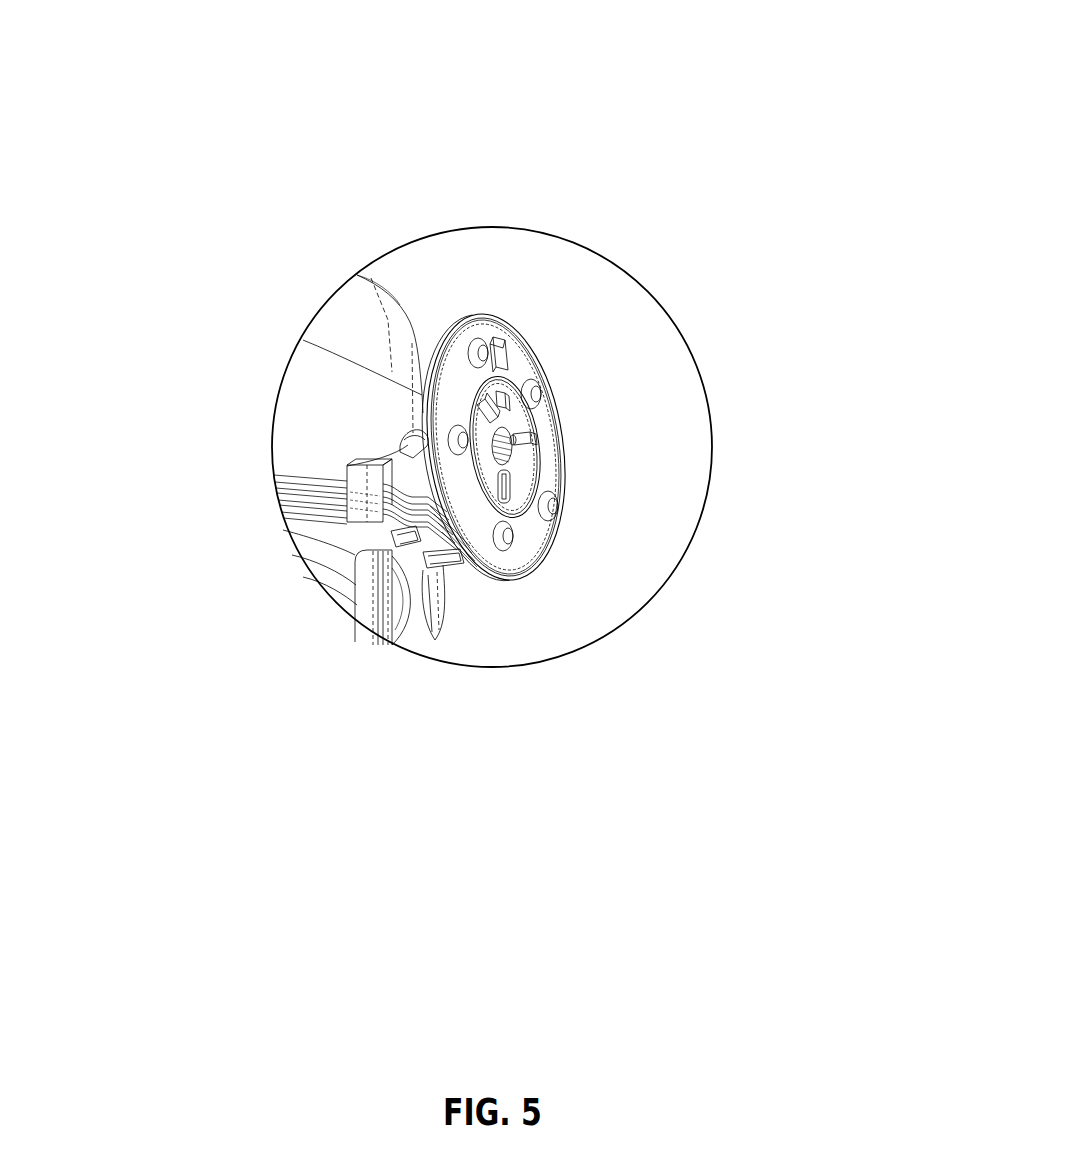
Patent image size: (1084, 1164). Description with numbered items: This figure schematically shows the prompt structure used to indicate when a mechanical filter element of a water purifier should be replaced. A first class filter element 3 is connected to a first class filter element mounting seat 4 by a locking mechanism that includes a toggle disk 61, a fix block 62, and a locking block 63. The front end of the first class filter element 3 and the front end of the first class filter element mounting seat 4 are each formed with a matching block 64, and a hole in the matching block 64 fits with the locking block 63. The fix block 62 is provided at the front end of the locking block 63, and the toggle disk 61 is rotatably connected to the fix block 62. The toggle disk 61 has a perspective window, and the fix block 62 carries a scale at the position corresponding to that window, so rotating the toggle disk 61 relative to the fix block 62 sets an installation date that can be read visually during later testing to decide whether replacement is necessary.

The first class filter element 3 is at (355, 587).
The first class filter element mounting seat 4 is at (368, 318).
The toggle disk 61 is at (547, 447).
The fix block 62 is at (527, 570).
The locking block 63 is at (403, 448).
The matching block 64 is at (388, 478).